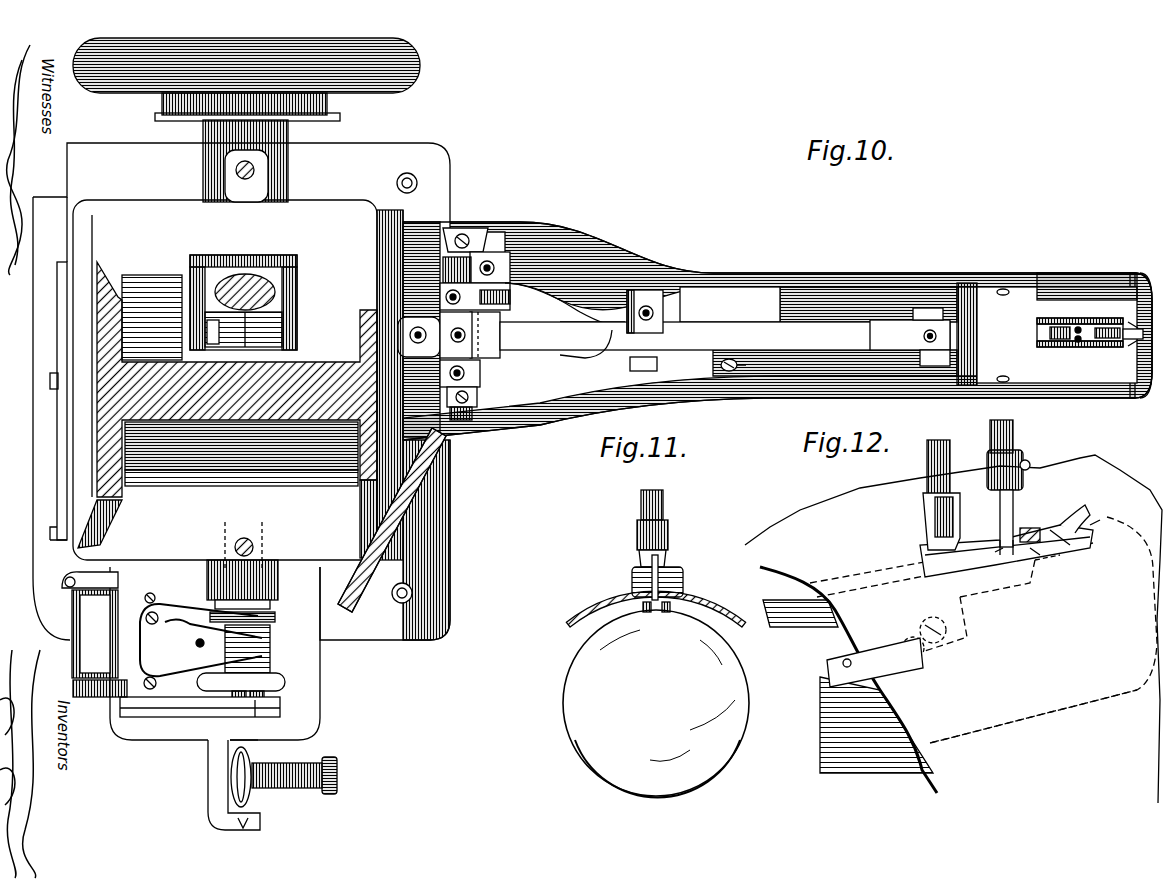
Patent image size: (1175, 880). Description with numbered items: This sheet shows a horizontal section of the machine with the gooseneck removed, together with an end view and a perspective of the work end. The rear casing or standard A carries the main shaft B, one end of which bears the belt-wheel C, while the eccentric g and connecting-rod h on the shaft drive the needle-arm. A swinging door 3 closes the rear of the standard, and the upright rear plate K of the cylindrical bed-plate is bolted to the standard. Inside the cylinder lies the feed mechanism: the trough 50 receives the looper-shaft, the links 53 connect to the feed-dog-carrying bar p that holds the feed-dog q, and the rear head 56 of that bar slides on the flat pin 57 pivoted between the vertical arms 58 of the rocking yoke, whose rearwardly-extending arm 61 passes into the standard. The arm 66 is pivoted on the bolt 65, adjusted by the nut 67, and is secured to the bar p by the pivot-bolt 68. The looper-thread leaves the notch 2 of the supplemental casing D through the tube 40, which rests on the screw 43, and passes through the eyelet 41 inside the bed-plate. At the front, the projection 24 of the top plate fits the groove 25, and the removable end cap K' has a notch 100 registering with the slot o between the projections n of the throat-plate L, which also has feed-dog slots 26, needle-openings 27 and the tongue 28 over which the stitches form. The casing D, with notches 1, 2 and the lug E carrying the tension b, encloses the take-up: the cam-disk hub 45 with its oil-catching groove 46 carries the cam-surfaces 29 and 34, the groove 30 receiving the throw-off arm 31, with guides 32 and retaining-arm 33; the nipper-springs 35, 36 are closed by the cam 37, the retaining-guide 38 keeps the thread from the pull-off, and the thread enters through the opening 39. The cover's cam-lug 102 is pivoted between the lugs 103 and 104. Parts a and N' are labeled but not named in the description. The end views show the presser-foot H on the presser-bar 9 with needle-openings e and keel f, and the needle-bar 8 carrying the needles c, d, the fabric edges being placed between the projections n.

In FIG. 10, the belt-wheel C is at (330, 103).
In FIG. 10, the eccentric g is at (272, 258).
In FIG. 10, the connecting-rod h is at (268, 286).
In FIG. 10, the upright rear plate K is at (390, 385).
In FIG. 10, the rearwardly-extending arm 61 is at (438, 290).
In FIG. 10, the nut 67 is at (492, 243).
In FIG. 10, the bolt 65 is at (510, 303).
In FIG. 10, the head 56 is at (488, 335).
In FIG. 10, the flat pin 57 is at (456, 336).
In FIG. 10, the vertical arms 58 is at (555, 373).
In FIG. 10, the arm 66 is at (565, 283).
In FIG. 10, the trough 50 is at (585, 325).
In FIG. 10, the feed-dog-carrying bar p is at (758, 334).
In FIG. 10, the link a is at (614, 335).
In FIG. 10, the pivot-bolt 68 is at (652, 292).
In FIG. 10, the eyelet 41 is at (745, 372).
In FIG. 10, the links 53 is at (918, 315).
In FIG. 10, the groove 25 is at (965, 372).
In FIG. 10, the cloth or throat plate L is at (1030, 375).
In FIG. 10, the removable end cap K' is at (1087, 278).
In FIG. 11, the removable end cap K' is at (656, 703).
In FIG. 12, the removable end cap K' is at (1033, 701).
In FIG. 10, the feed-dog q is at (1045, 328).
In FIG. 10, the tongue 28 is at (1078, 327).
In FIG. 10, the slots 26 is at (1066, 345).
In FIG. 12, the slots 26 is at (1088, 565).
In FIG. 10, the openings 27 is at (1082, 350).
In FIG. 10, the slot or groove o is at (1130, 332).
In FIG. 10, the projections n is at (1132, 322).
In FIG. 11, the projections n is at (643, 605).
In FIG. 12, the projections n is at (1093, 527).
In FIG. 10, the notch 100 is at (1150, 290).
In FIG. 10, the tube 40 is at (410, 512).
In FIG. 10, the screw 43 is at (368, 565).
In FIG. 10, the notch 2 is at (318, 624).
In FIG. 10, the main shaft B is at (262, 543).
In FIG. 10, the rear casing or standard A is at (85, 477).
In FIG. 10, the transversely-swinging door 3 is at (64, 452).
In FIG. 10, the supplemental casing D is at (320, 697).
In FIG. 10, the integral lug E is at (207, 788).
In FIG. 10, the tension b is at (284, 779).
In FIG. 10, the opening 39 is at (243, 822).
In FIG. 10, the notch 1 is at (243, 738).
In FIG. 10, the annular groove 46 is at (255, 580).
In FIG. 10, the hub 45 is at (272, 608).
In FIG. 10, the cam-surface 29 is at (272, 630).
In FIG. 10, the groove 30 is at (276, 643).
In FIG. 10, the guides 32 is at (199, 612).
In FIG. 10, the retaining-arm 33 is at (168, 640).
In FIG. 10, the throw-off arm 31 is at (201, 661).
In FIG. 10, the slack-controller cam-surface 34 is at (202, 646).
In FIG. 10, the upper nipper-spring 35 is at (241, 683).
In FIG. 10, the lower nipper-spring 36 is at (262, 692).
In FIG. 10, the cam 37 is at (240, 698).
In FIG. 10, the shelf N' is at (200, 714).
In FIG. 10, the retaining-guide 38 is at (268, 715).
In FIG. 10, the lug 103 is at (90, 577).
In FIG. 10, the cam-lug 102 is at (95, 634).
In FIG. 10, the lug 104 is at (100, 688).
In FIG. 11, the presser-foot H is at (642, 565).
In FIG. 12, the presser-foot H is at (987, 560).
In FIG. 11, the keel or fin f is at (663, 576).
In FIG. 12, the keel or fin f is at (1072, 520).
In FIG. 12, the spring, tongue, or projection 24 is at (910, 665).
In FIG. 12, the presser-bar 9 is at (927, 463).
In FIG. 12, the needle-bar 8 is at (990, 441).
In FIG. 12, the needle c is at (1013, 520).
In FIG. 12, the needle d is at (997, 527).
In FIG. 12, the openings e is at (996, 540).